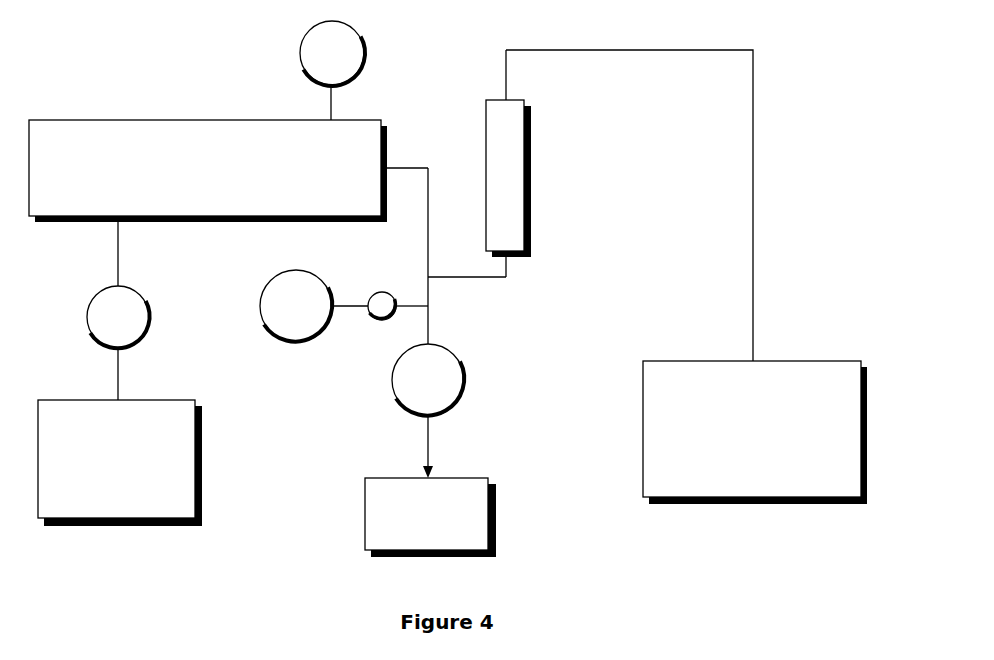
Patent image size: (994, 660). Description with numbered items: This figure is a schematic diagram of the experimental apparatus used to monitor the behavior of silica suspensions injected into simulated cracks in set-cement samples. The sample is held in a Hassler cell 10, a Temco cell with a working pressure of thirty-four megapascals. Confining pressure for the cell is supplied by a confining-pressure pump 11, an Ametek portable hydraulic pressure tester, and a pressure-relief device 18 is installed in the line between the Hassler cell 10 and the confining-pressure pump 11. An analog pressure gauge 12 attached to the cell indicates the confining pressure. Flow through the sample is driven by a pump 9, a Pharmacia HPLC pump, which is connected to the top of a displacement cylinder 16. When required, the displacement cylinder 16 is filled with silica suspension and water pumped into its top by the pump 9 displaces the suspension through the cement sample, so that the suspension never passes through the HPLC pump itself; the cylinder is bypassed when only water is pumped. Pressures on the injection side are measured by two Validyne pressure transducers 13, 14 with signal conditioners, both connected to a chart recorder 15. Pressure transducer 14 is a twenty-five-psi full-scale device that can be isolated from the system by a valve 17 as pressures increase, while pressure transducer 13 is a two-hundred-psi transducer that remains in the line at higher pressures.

The pump 9 is at (738, 442).
The Hassler cell 10 is at (188, 182).
The confining-pressure pump 11 is at (100, 477).
The analog pressure gauge 12 is at (316, 66).
The pressure transducer 13 is at (412, 393).
The pressure transducer 14 is at (280, 319).
The chart recorder 15 is at (411, 531).
The displacement cylinder 16 is at (520, 189).
The valve 17 is at (375, 319).
The pressure-relief device 18 is at (102, 331).